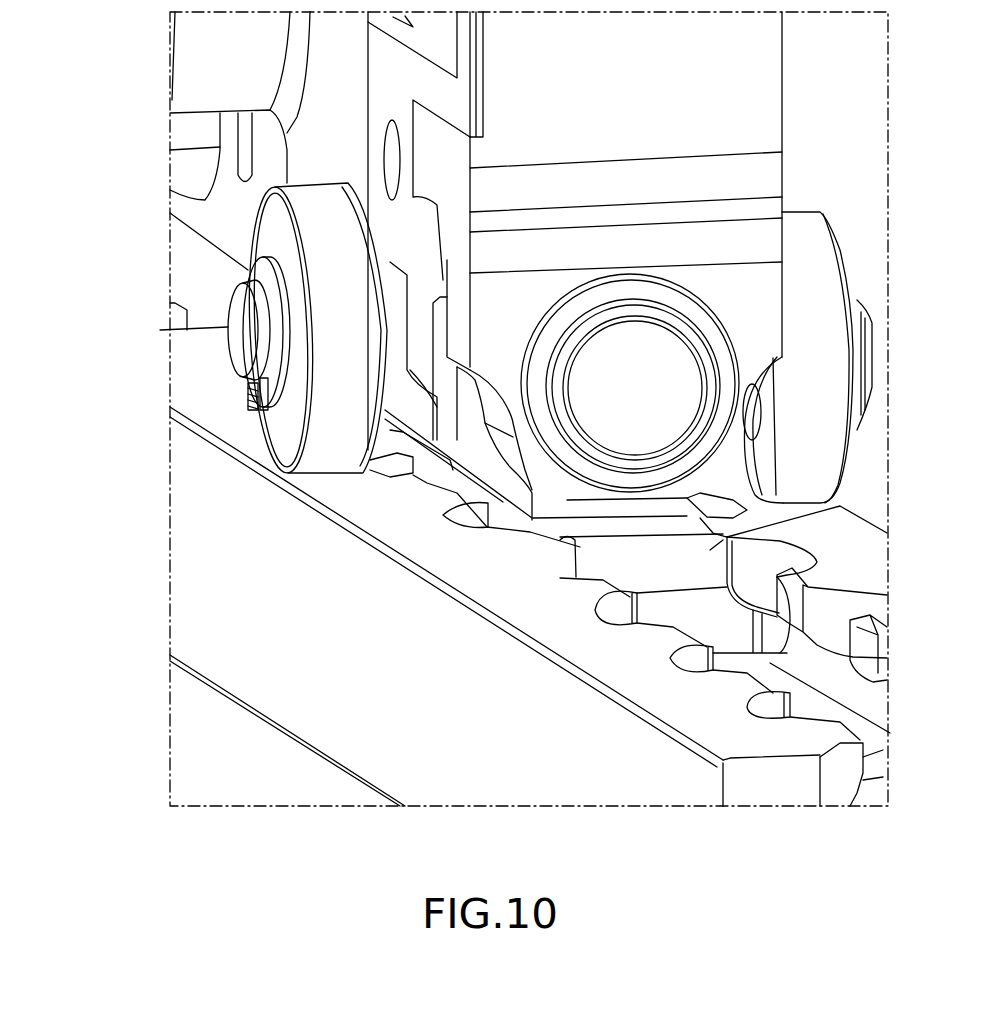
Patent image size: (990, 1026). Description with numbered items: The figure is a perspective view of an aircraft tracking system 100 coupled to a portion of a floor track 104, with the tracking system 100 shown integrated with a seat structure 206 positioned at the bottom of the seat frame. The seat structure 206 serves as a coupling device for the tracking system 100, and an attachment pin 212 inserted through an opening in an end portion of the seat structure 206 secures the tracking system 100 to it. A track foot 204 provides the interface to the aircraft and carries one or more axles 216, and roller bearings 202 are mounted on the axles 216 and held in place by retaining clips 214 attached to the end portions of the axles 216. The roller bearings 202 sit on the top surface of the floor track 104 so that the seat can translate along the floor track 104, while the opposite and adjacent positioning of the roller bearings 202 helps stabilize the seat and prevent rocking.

The aircraft tracking system 100 is at (138, 150).
The floor track 104 is at (190, 603).
The roller bearing 202 is at (283, 447).
The track foot 204 is at (840, 506).
The seat structure 206 is at (765, 98).
The attachment pin 212 is at (683, 353).
The retaining clip 214 is at (257, 403).
The axle 216 is at (245, 349).